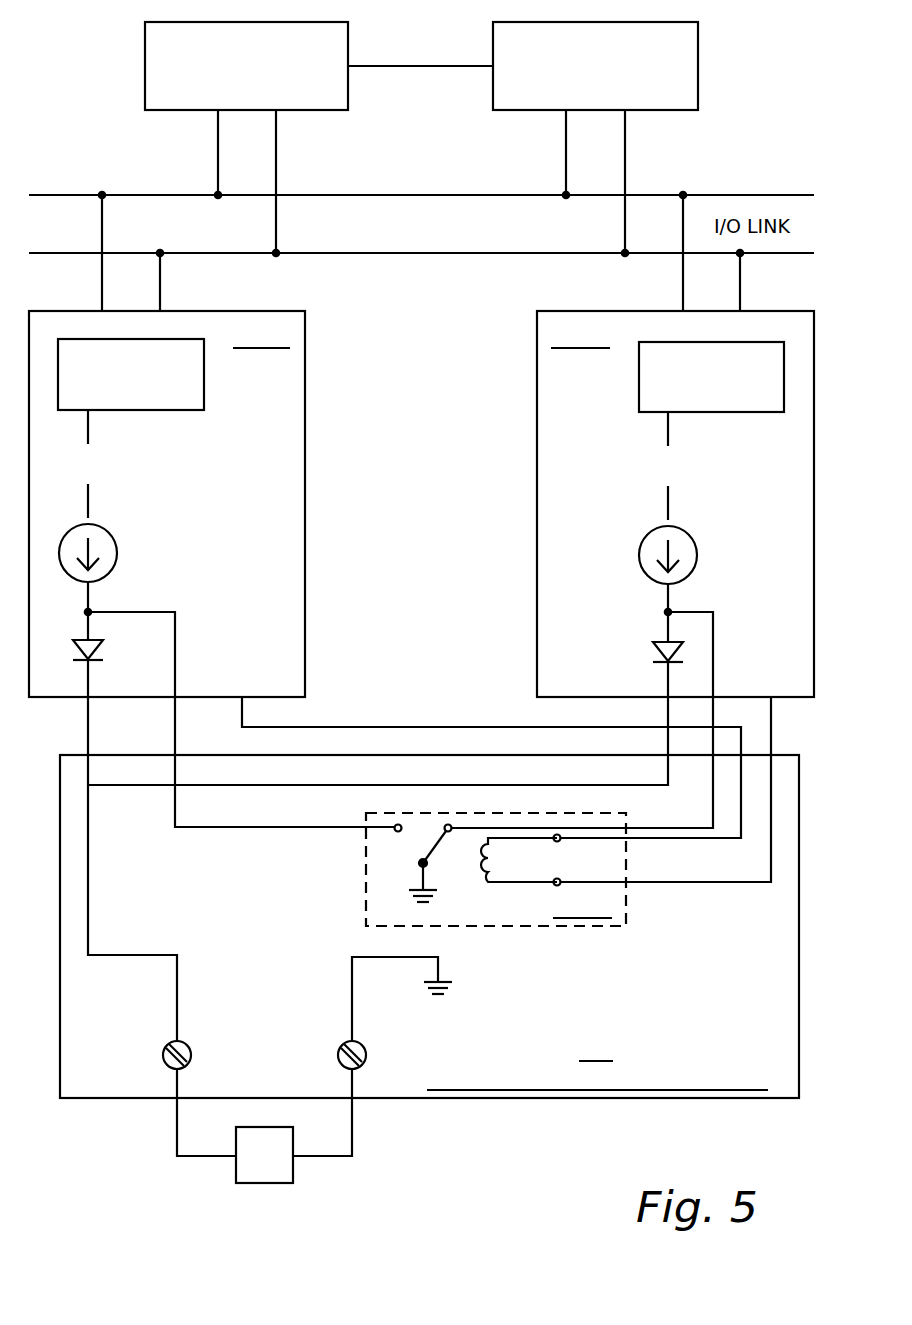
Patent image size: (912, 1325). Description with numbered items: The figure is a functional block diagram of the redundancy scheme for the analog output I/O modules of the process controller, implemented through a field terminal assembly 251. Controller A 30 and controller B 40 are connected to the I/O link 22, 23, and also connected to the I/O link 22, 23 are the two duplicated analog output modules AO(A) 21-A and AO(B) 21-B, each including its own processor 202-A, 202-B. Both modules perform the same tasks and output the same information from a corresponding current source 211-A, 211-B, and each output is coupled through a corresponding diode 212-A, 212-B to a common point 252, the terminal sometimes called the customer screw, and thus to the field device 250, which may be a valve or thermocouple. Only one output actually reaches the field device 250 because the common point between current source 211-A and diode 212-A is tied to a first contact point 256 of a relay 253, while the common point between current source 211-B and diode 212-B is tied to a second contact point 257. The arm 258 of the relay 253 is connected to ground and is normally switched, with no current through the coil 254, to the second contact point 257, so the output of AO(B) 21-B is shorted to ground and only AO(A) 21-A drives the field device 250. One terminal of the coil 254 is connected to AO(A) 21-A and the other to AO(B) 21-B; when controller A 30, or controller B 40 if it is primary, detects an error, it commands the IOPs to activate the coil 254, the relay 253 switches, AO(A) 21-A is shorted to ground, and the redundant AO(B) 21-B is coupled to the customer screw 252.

The controller A 30 is at (145, 45).
The controller B 40 is at (698, 50).
The I/O link 22 is at (689, 172).
The I/O link 23 is at (740, 255).
The AO(A) I/O module 21-A is at (305, 360).
The AO(B) I/O module 21-B is at (537, 357).
The processor 202-A is at (172, 410).
The processor 202-B is at (660, 412).
The current source 211-A is at (115, 546).
The current source 211-B is at (693, 541).
The diode 212-A is at (100, 651).
The diode 212-B is at (658, 650).
The field device 250 is at (276, 1183).
The field terminal assembly 251 is at (429, 926).
The common point 252 is at (191, 1058).
The relay 253 is at (626, 910).
The coil 254 is at (485, 880).
The first contact point 256 is at (395, 825).
The second contact point 257 is at (451, 824).
The arm 258 is at (432, 849).